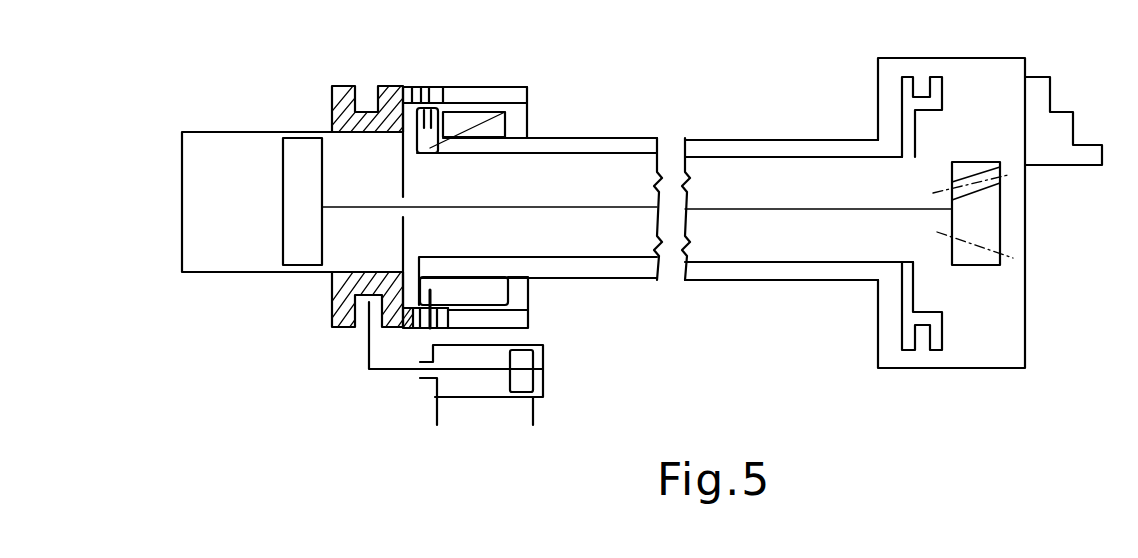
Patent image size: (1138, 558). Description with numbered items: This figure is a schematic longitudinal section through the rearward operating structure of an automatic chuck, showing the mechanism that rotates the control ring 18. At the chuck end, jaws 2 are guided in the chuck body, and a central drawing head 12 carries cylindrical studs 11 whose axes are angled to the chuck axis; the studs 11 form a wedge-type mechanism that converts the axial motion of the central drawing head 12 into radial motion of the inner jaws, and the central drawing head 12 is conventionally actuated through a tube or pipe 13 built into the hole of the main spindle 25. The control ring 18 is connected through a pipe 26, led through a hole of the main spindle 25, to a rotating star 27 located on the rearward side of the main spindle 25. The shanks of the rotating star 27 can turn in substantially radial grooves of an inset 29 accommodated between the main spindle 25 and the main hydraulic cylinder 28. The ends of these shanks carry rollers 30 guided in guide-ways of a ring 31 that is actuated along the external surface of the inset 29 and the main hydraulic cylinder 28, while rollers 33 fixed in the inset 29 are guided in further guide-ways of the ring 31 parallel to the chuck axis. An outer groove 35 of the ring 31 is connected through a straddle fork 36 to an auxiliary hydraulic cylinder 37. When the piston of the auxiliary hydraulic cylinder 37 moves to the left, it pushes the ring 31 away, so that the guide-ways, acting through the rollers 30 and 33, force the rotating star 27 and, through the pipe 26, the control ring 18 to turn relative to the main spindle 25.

The chuck jaws 2 is at (1058, 132).
The cylindrical studs 11 is at (970, 183).
The central drawing head 12 is at (987, 237).
The tube or pipe 13 is at (760, 213).
The control ring 18 is at (942, 322).
The main spindle 25 is at (740, 280).
The pipe 26 is at (627, 257).
The rotating star 27 is at (505, 112).
The main hydraulic cylinder 28 is at (212, 153).
The inset 29 is at (495, 294).
The rollers 30 is at (436, 93).
The ring 31 is at (330, 98).
The rollers 33 is at (440, 316).
The outer groove 35 is at (357, 315).
The straddle fork 36 is at (368, 355).
The auxiliary hydraulic cylinder 37 is at (427, 380).